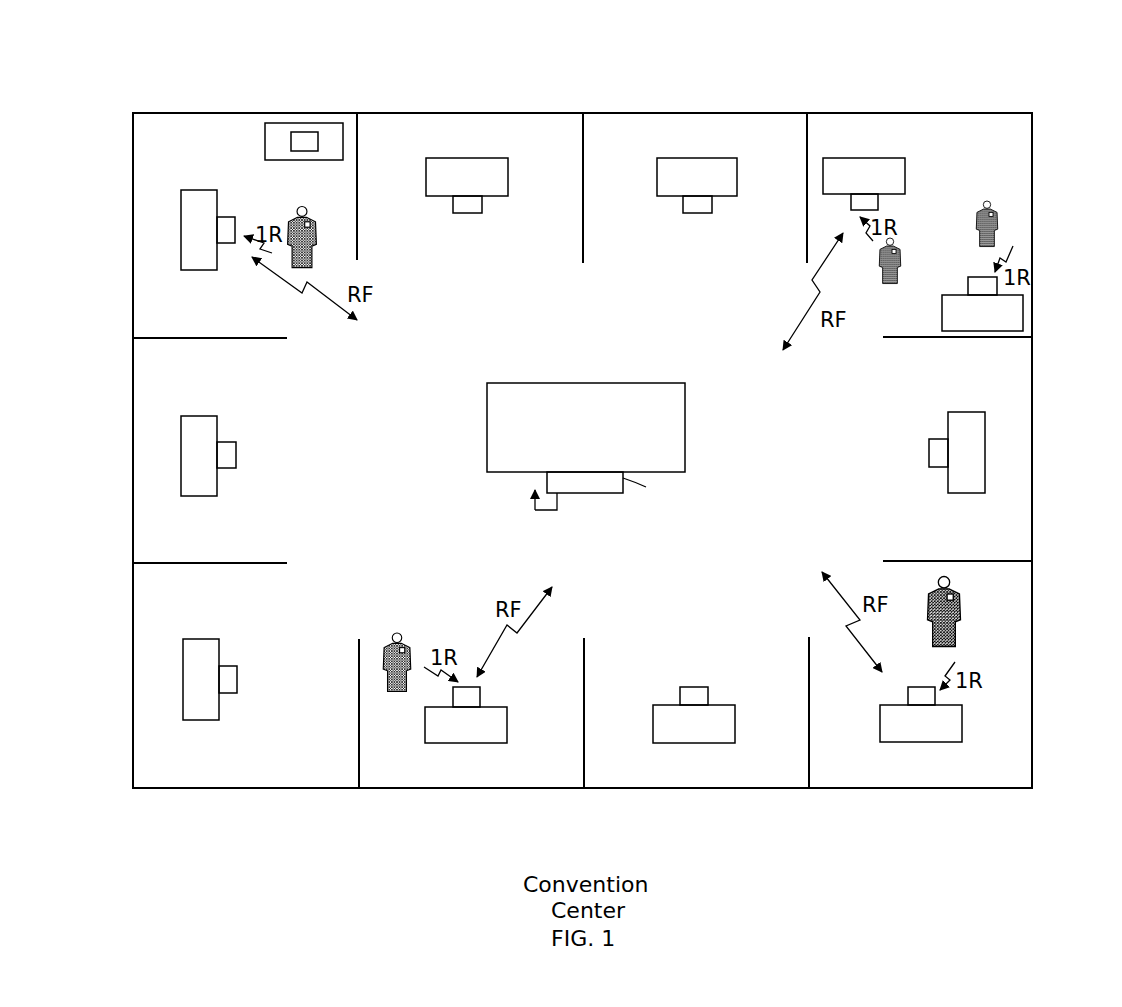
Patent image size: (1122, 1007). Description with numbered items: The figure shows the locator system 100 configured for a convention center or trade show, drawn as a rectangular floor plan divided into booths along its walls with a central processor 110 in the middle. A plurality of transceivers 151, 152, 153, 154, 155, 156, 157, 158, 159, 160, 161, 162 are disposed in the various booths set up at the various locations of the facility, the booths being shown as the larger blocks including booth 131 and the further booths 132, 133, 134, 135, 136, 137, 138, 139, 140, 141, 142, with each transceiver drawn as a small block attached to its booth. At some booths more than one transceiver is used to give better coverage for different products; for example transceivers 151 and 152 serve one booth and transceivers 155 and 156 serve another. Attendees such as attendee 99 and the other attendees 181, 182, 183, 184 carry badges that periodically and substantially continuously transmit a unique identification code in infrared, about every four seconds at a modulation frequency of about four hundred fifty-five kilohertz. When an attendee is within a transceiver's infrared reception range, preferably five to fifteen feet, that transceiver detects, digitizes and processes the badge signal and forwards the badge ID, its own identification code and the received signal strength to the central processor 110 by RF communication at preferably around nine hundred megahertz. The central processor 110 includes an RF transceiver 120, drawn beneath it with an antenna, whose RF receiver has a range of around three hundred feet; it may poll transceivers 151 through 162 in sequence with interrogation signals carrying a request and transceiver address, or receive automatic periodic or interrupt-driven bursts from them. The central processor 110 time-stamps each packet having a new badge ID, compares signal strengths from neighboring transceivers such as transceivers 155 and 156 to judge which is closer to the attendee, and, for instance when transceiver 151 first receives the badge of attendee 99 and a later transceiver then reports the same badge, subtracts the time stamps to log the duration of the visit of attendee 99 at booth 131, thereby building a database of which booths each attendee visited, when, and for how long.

The convention center system 100 is at (83, 73).
The central processor 110 is at (592, 383).
The RF transceiver 120 is at (589, 494).
The booth 131 is at (181, 217).
The exhibit booth 132 is at (302, 123).
The exhibit booth 133 is at (470, 158).
The exhibit booth 134 is at (708, 158).
The exhibit booth 135 is at (880, 158).
The exhibit booth 136 is at (1024, 315).
The exhibit booth 137 is at (985, 448).
The exhibit booth 138 is at (945, 742).
The exhibit booth 139 is at (720, 743).
The exhibit booth 140 is at (468, 743).
The exhibit booth 141 is at (200, 720).
The exhibit booth 142 is at (181, 462).
The transceiver 151 is at (226, 244).
The transceiver 152 is at (302, 152).
The transceiver 153 is at (482, 210).
The transceiver 154 is at (712, 210).
The transceiver 155 is at (878, 202).
The transceiver 156 is at (968, 284).
The transceiver 157 is at (934, 467).
The transceiver 158 is at (908, 697).
The transceiver 159 is at (701, 687).
The transceiver 160 is at (480, 695).
The transceiver 161 is at (231, 666).
The transceiver 162 is at (236, 442).
The attendee 99 is at (313, 214).
The attendee 181 is at (917, 241).
The attendee 182 is at (975, 243).
The attendee 183 is at (970, 592).
The attendee 184 is at (373, 638).